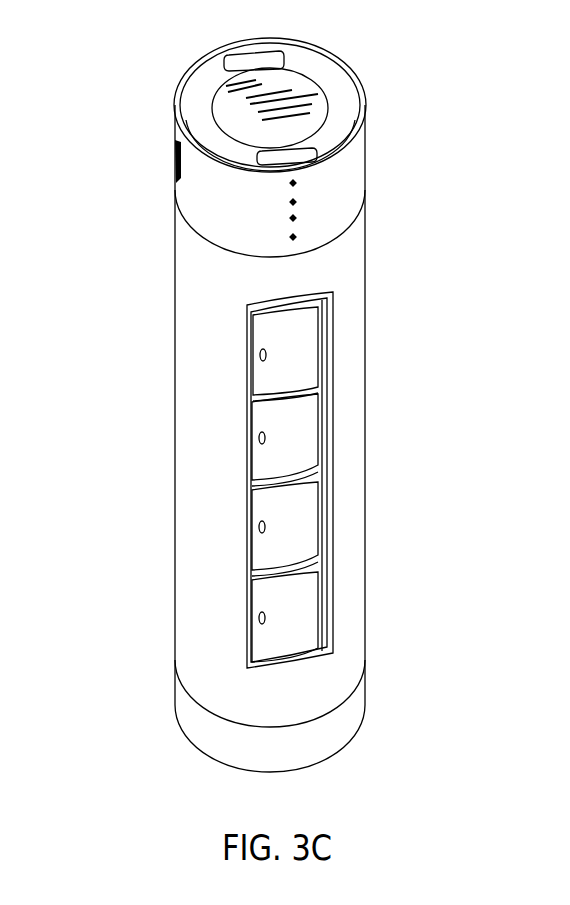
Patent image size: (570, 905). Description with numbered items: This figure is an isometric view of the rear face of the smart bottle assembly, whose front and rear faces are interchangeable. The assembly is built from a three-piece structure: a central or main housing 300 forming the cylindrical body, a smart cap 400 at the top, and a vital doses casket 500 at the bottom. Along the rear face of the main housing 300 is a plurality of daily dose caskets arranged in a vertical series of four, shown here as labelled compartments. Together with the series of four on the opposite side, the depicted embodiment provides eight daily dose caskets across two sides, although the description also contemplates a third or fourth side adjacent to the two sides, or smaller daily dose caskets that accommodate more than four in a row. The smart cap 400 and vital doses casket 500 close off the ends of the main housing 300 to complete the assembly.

The main housing 300 is at (175, 411).
The smart cap 400 is at (365, 153).
The vital doses casket 500 is at (365, 700).